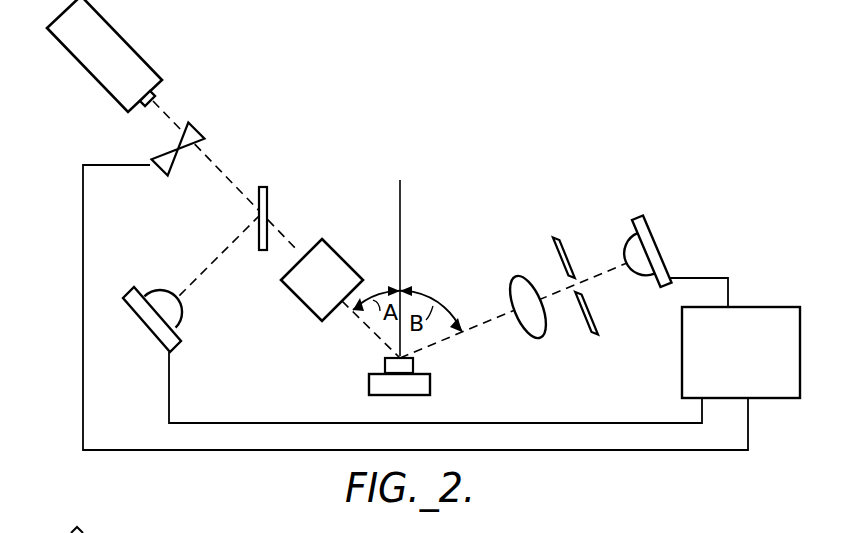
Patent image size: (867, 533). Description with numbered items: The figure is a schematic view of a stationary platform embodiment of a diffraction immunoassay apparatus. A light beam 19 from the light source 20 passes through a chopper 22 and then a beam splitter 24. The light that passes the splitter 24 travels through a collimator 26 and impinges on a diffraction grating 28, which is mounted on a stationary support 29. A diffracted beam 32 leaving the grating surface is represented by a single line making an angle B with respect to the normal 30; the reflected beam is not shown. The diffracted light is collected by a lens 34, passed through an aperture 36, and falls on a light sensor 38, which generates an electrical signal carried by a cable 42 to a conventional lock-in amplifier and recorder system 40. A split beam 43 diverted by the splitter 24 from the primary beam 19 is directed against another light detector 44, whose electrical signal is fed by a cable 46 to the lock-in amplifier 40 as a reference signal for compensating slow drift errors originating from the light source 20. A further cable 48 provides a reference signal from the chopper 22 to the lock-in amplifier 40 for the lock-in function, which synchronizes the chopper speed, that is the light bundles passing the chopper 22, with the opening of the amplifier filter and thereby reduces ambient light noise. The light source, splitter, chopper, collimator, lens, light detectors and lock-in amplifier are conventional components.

The light beam 19 is at (216, 166).
The light source 20 is at (115, 30).
The chopper 22 is at (195, 123).
The beam splitter 24 is at (263, 187).
The collimator 26 is at (333, 240).
The diffraction grating 28 is at (413, 366).
The stationary support 29 is at (430, 386).
The normal 30 is at (402, 198).
The diffracted beam 32 is at (497, 316).
The lens 34 is at (515, 276).
The aperture 36 is at (558, 236).
The light sensor 38 is at (640, 214).
The lock-in amplifier and recorder system 40 is at (750, 307).
The cable 42 is at (702, 278).
The split beam 43 is at (202, 281).
The light detector 44 is at (181, 339).
The cable 46 is at (170, 383).
The cable 48 is at (83, 383).